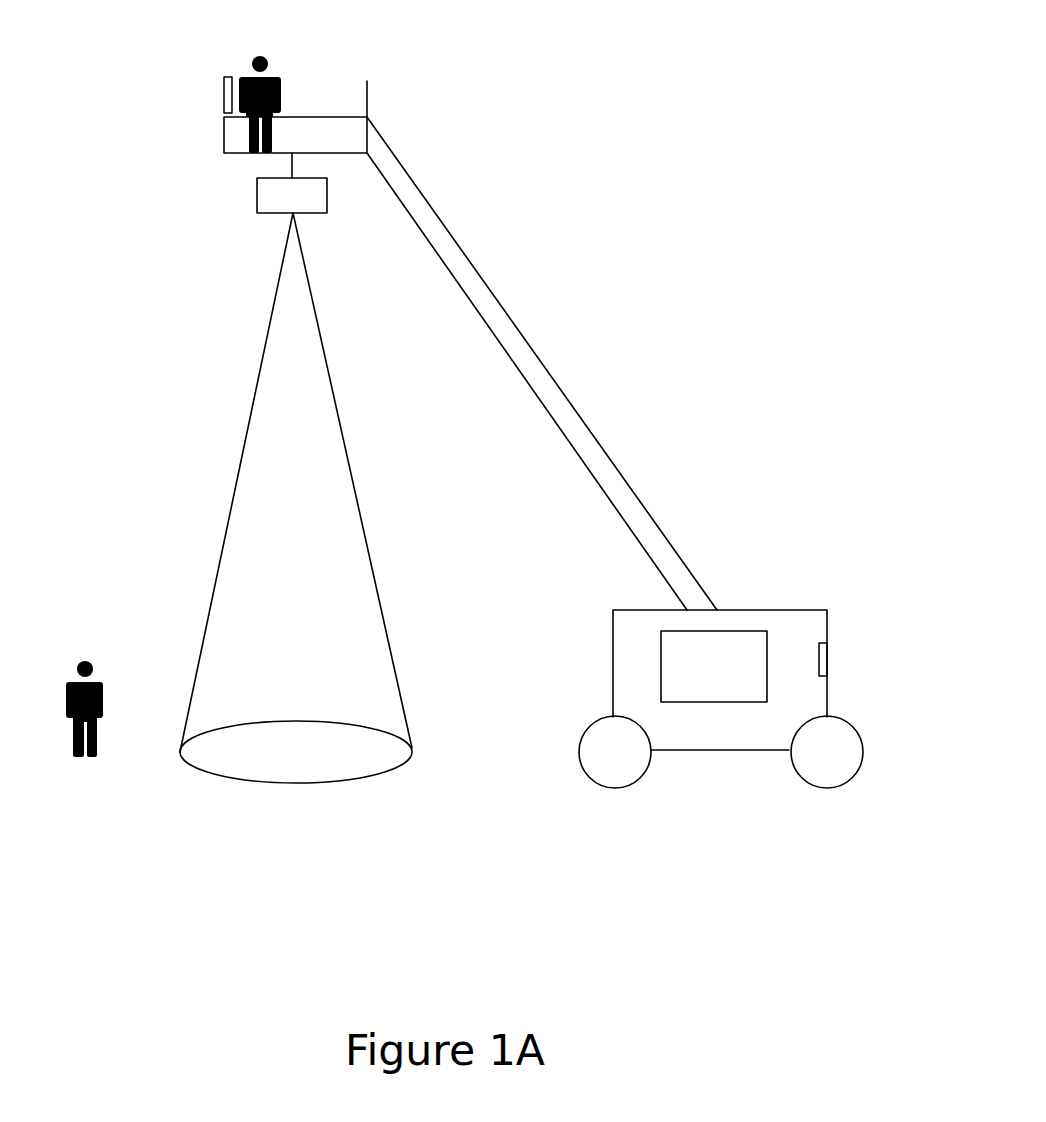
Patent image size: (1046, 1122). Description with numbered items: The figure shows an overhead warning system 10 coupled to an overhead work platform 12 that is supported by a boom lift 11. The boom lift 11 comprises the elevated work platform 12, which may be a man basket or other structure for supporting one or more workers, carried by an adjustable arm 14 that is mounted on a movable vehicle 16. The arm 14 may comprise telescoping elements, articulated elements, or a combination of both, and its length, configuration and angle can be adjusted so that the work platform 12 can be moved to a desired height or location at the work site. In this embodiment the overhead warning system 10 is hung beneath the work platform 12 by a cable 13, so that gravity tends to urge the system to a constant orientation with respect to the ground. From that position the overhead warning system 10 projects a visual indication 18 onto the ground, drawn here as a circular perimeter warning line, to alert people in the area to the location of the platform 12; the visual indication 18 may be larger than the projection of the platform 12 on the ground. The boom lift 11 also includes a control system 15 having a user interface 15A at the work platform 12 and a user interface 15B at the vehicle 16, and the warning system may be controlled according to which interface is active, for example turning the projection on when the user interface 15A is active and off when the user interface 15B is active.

The overhead warning system 10 is at (256, 196).
The boom lift 11 is at (679, 205).
The work platform 12 is at (367, 100).
The cable 13 is at (291, 166).
The adjustable arm 14 is at (527, 337).
The control system 15 is at (717, 702).
The user interface 15A is at (225, 77).
The user interface 15B is at (827, 654).
The movable vehicle 16 is at (775, 610).
The visual indication 18 is at (373, 775).